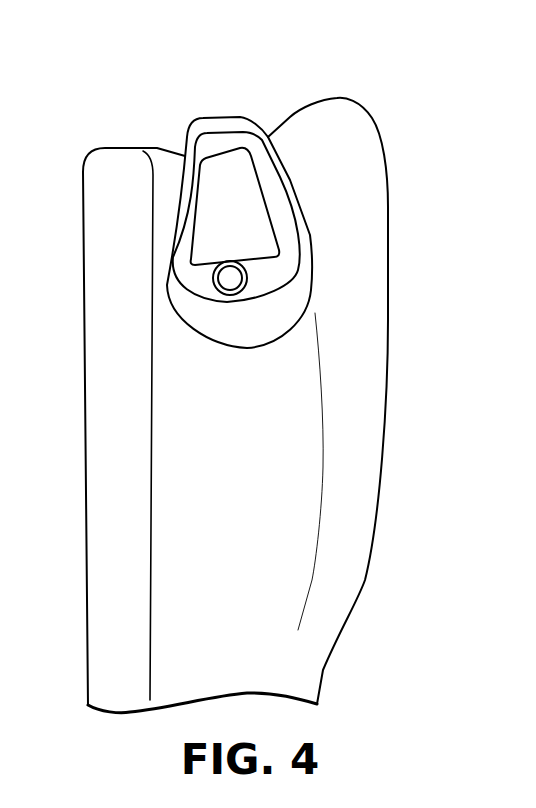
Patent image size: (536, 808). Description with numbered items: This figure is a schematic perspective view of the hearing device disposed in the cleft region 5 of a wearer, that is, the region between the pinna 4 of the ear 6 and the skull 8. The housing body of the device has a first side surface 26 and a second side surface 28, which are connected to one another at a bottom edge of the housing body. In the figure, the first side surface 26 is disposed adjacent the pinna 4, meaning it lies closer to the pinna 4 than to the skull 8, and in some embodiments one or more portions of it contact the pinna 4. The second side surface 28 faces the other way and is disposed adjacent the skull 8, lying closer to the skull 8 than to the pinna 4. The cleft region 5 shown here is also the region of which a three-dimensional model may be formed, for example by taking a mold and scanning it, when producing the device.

The pinna 4 is at (383, 143).
The cleft region 5 is at (291, 206).
The ear 6 is at (257, 372).
The skull 8 is at (123, 227).
The first side surface 26 is at (283, 157).
The second side surface 28 is at (187, 153).